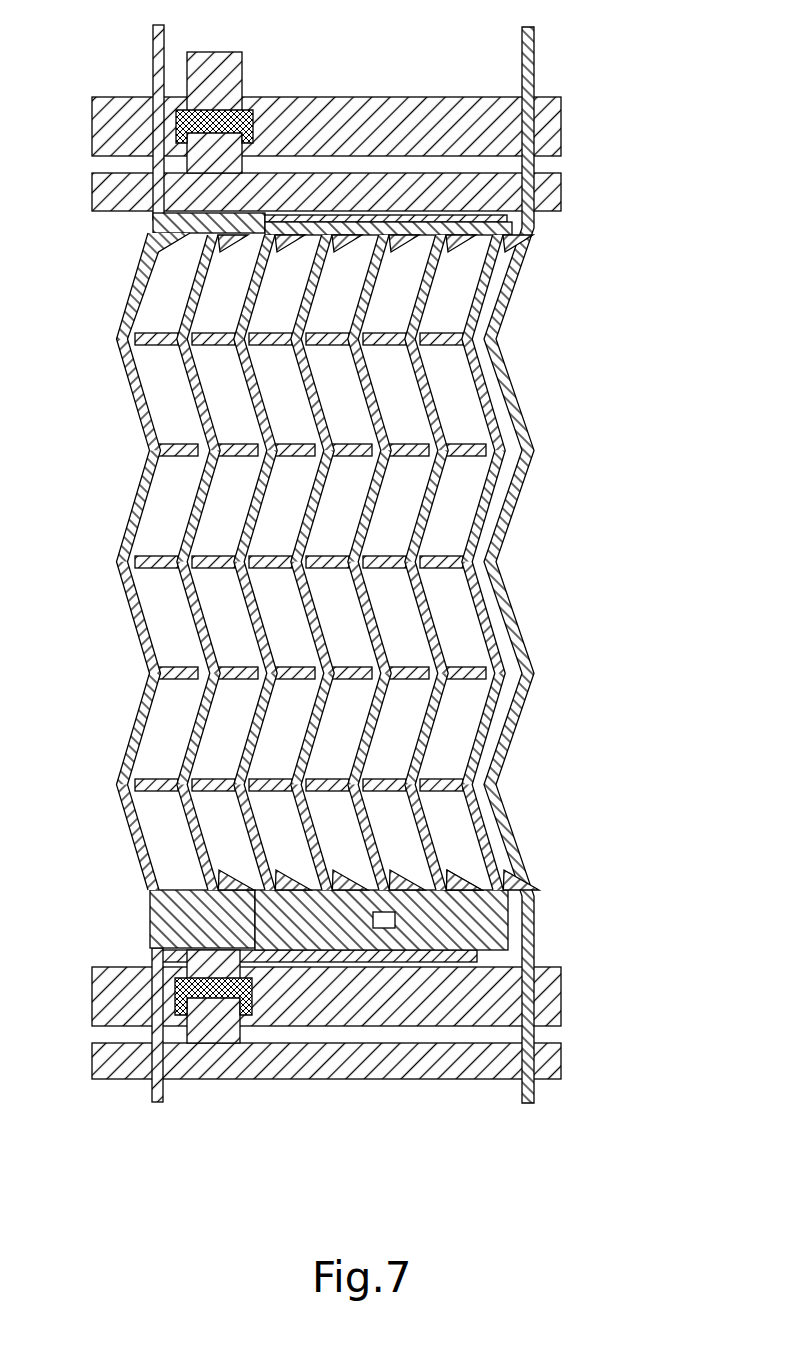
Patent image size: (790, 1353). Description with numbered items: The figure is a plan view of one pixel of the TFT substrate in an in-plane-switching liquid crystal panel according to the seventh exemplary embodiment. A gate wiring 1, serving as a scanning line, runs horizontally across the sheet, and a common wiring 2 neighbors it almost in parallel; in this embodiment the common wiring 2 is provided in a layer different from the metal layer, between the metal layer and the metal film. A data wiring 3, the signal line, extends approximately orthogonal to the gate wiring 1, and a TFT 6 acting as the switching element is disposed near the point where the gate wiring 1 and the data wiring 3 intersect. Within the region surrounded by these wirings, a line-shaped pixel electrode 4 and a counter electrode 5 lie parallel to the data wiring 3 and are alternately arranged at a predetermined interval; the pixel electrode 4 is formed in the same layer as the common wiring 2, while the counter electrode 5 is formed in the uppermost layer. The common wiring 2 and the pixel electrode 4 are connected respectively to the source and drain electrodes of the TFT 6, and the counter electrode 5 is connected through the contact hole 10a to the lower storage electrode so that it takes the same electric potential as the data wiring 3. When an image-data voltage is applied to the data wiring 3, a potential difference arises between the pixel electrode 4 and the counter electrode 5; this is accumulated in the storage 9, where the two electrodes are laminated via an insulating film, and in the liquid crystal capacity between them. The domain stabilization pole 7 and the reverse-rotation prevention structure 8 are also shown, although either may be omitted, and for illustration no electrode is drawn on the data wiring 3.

The gate wiring 1 is at (563, 126).
The common wiring 2 is at (563, 192).
The data wiring 3 is at (155, 50).
The pixel electrode 4 is at (430, 400).
The counter electrode 5 is at (140, 503).
The TFT 6 is at (255, 1007).
The domain stabilization pole 7 is at (468, 690).
The reverse-rotation prevention structure 8 is at (465, 880).
The storage 9 is at (497, 920).
The contact hole 10a is at (380, 918).